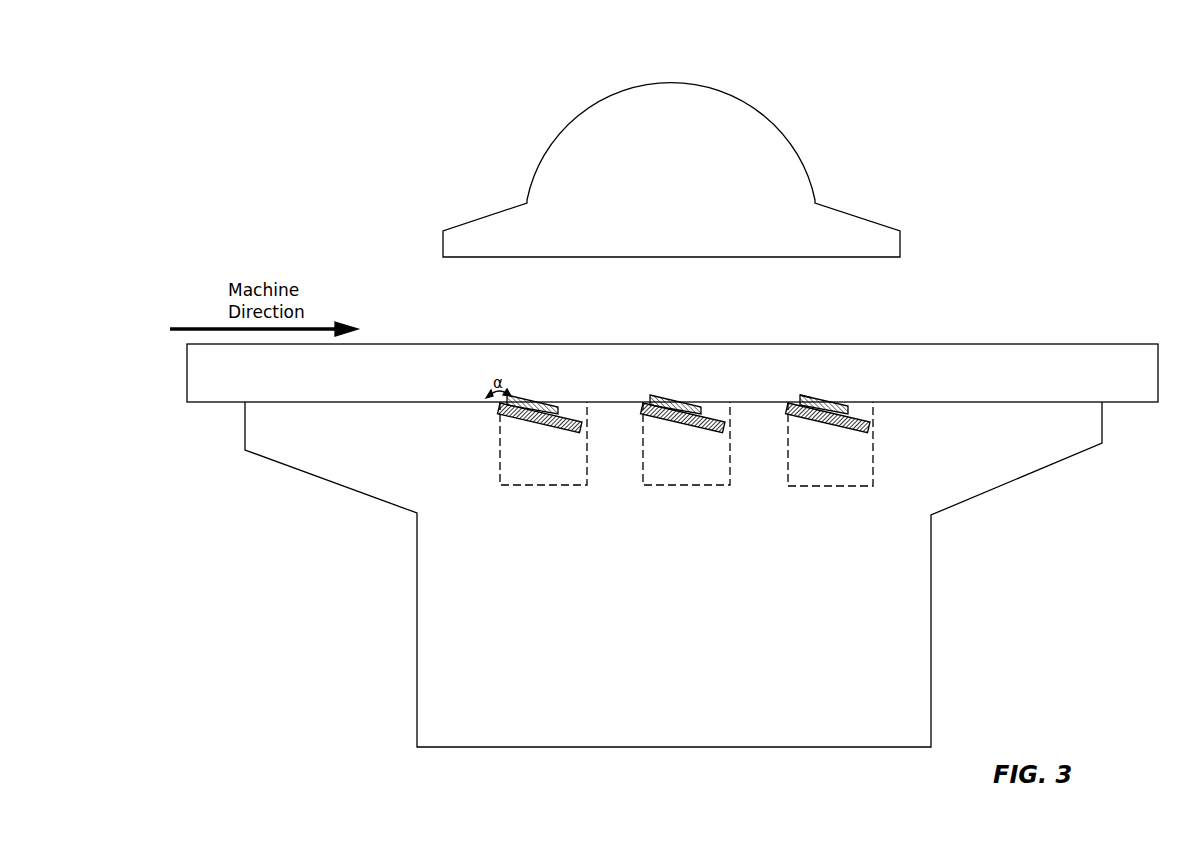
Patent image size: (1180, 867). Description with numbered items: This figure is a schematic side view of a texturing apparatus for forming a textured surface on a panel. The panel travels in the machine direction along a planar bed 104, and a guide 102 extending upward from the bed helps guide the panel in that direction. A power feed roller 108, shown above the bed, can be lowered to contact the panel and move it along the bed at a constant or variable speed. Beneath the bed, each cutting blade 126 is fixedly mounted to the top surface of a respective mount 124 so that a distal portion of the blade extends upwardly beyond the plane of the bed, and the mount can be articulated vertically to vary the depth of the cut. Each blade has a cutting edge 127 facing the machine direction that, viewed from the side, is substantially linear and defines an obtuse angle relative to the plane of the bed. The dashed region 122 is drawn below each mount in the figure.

The power feed roller 108 is at (767, 112).
The guide 102 is at (1015, 343).
The planar bed 104 is at (288, 402).
The sensor housing 122 is at (833, 487).
The mount 124 is at (857, 433).
The cutting blade 126 is at (830, 400).
The cutting edge 127 is at (800, 394).